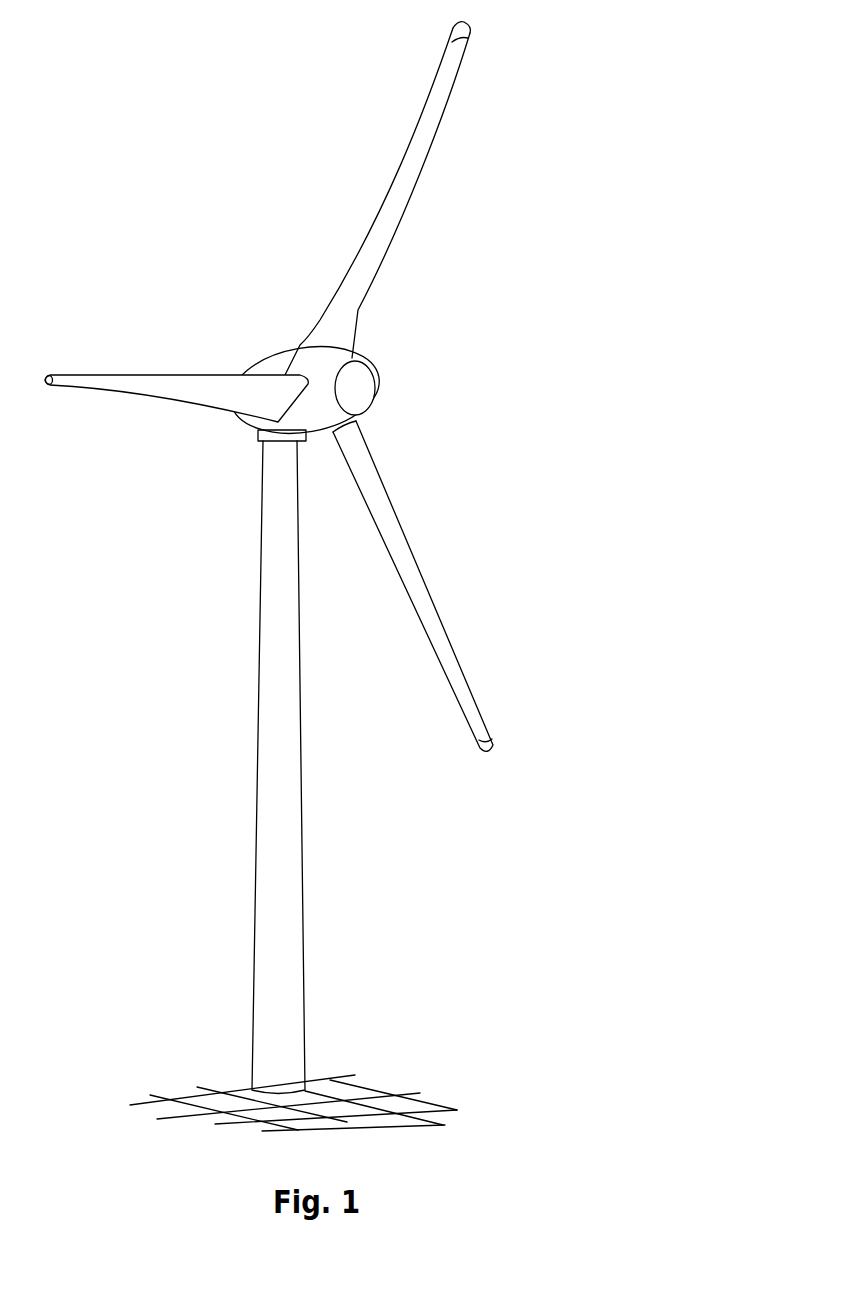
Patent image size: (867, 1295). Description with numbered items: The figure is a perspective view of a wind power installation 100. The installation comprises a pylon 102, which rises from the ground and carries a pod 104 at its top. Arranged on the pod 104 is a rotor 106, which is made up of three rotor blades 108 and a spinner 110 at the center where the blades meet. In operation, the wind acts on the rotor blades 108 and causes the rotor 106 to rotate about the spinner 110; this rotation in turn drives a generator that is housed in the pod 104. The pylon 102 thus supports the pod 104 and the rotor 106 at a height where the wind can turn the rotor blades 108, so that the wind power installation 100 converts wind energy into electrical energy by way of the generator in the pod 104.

The wind power installation 100 is at (193, 563).
The pylon 102 is at (285, 865).
The pod 104 is at (277, 362).
The rotor 106 is at (440, 312).
The rotor blades 108 is at (418, 148).
The spinner 110 is at (360, 387).